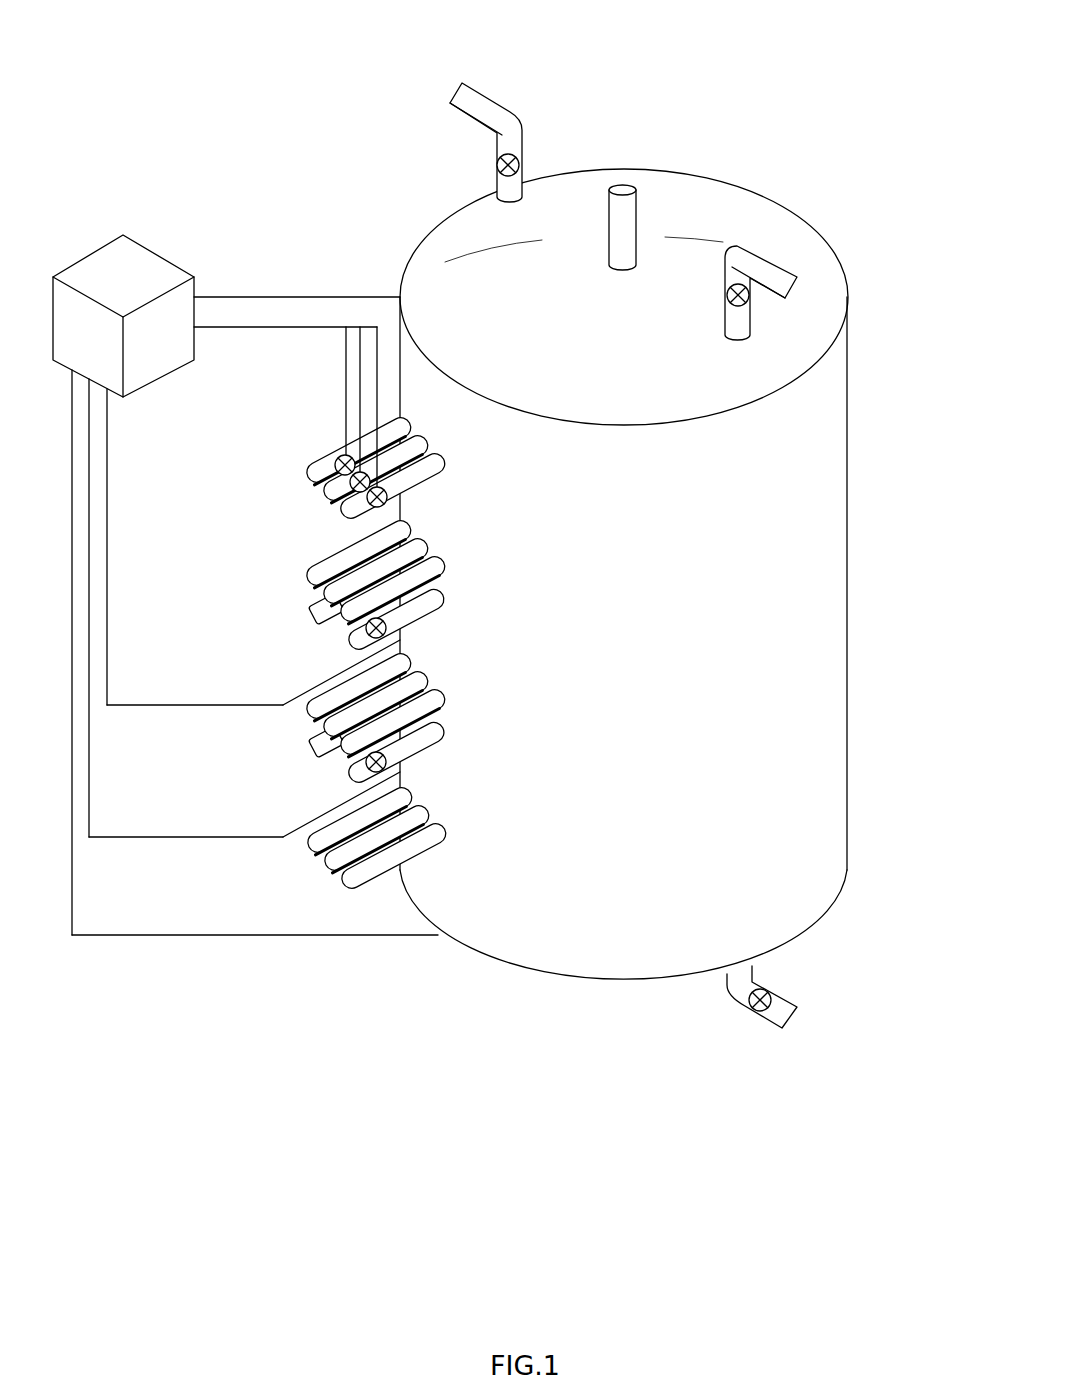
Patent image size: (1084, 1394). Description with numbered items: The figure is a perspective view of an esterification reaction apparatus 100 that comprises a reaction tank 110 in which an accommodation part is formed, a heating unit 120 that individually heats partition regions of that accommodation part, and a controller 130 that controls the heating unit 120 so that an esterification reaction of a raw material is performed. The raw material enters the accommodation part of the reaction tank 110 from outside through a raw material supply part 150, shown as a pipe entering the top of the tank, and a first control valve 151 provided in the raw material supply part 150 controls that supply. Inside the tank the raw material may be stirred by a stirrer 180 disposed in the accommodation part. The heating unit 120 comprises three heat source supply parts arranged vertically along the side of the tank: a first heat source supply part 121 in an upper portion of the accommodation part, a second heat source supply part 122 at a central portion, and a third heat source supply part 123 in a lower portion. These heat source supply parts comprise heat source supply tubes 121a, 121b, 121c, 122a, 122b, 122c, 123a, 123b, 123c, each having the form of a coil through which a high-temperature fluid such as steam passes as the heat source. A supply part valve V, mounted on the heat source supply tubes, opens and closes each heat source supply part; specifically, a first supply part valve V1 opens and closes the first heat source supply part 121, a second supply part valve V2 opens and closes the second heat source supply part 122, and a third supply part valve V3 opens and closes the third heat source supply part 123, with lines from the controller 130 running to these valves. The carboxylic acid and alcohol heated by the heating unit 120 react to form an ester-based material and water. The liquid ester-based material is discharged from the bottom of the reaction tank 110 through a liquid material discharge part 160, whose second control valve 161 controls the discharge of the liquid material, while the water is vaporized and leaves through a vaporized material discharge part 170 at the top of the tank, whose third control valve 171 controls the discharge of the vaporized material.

The esterification reaction apparatus 100 is at (846, 77).
The reaction tank 110 is at (851, 431).
The heating unit 120 is at (292, 766).
The first heat source supply part 121 is at (328, 438).
The heat source supply tube 121a is at (304, 490).
The heat source supply tube 121b is at (321, 508).
The heat source supply tube 121c is at (338, 526).
The second heat source supply part 122 is at (329, 600).
The heat source supply tube 122a is at (307, 612).
The heat source supply tube 122b is at (322, 634).
The heat source supply tube 122c is at (345, 657).
The third heat source supply part 123 is at (329, 732).
The heat source supply tube 123a is at (307, 745).
The heat source supply tube 123b is at (322, 767).
The heat source supply tube 123c is at (345, 790).
The controller 130 is at (88, 256).
The raw material supply part 150 is at (481, 102).
The first control valve 151 is at (497, 163).
The liquid material discharge part 160 is at (810, 1020).
The second control valve 161 is at (753, 1011).
The vaporized material discharge part 170 is at (735, 253).
The third control valve 171 is at (727, 295).
The stirrer 180 is at (608, 198).
The supply part valve V is at (518, 1160).
The first supply part valve V1 is at (355, 470).
The second supply part valve V2 is at (386, 627).
The third supply part valve V3 is at (386, 761).